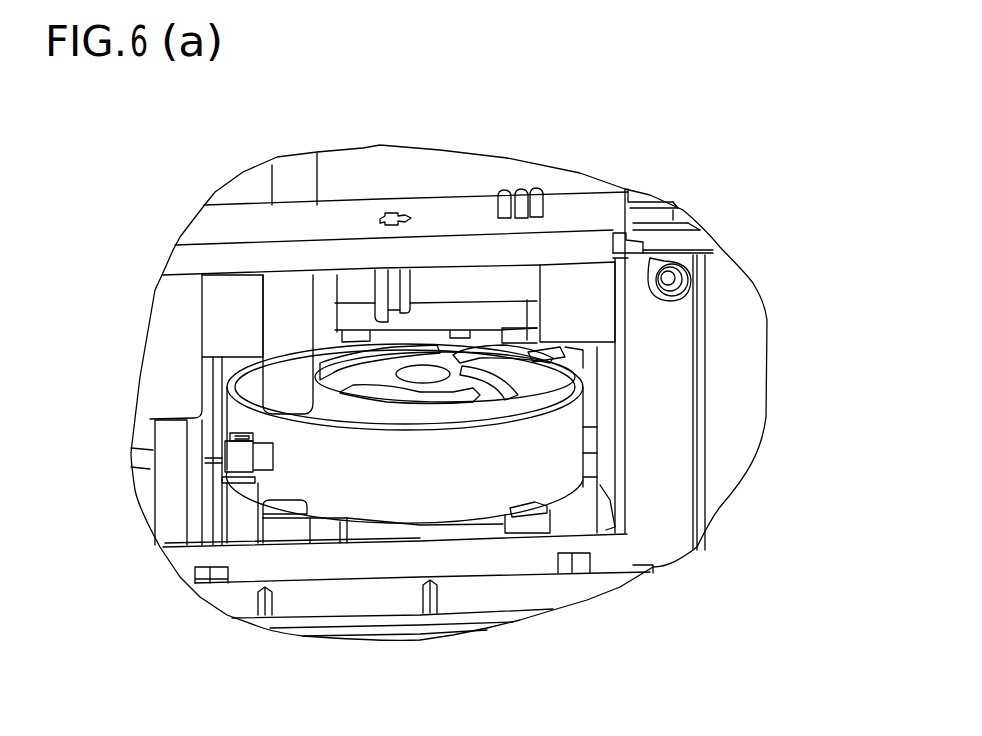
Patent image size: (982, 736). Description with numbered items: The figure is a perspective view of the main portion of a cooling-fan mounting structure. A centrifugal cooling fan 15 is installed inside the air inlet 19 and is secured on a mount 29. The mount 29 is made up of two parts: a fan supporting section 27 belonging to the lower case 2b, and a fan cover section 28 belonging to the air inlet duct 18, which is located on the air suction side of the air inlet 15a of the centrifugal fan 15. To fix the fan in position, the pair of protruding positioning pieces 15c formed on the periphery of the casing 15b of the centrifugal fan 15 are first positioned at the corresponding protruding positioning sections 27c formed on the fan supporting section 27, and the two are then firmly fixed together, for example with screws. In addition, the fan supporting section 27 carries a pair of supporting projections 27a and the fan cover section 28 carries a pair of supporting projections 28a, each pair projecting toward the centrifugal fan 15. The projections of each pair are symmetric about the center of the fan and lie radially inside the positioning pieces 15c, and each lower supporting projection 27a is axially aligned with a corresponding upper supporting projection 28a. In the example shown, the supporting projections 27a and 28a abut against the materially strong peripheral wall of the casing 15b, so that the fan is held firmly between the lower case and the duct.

The lower case 2b is at (570, 610).
The centrifugal cooling fan 15 is at (318, 489).
The air inlet of the centrifugal fan 15a is at (483, 338).
The casing 15b is at (340, 487).
The protruding positioning pieces 15c is at (227, 457).
The air inlet duct 18 is at (595, 190).
The air inlet 19 is at (627, 353).
The fan supporting section 27 is at (372, 613).
The supporting projections 27a is at (260, 587).
The protruding positioning sections 27c is at (213, 495).
The fan cover section 28 is at (423, 210).
The supporting projections 28a is at (260, 338).
The mount 29 is at (450, 530).